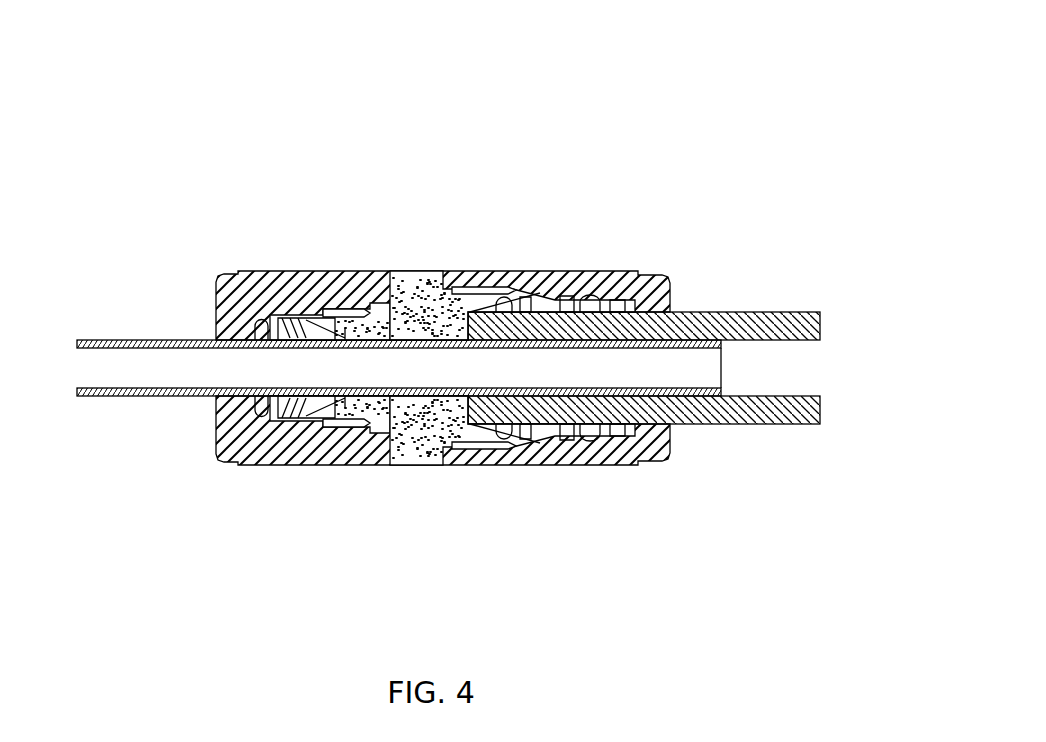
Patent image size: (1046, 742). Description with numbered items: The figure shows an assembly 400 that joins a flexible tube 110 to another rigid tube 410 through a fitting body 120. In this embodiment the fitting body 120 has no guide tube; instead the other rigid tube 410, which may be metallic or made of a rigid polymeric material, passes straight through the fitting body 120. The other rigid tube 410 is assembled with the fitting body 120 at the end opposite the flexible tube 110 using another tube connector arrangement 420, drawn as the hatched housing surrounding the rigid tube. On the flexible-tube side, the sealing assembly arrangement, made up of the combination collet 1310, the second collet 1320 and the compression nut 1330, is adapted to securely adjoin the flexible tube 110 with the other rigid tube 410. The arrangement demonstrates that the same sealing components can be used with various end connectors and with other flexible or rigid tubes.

The assembly 400 is at (448, 275).
The flexible tube 110 is at (746, 312).
The fitting body 120 is at (410, 465).
The other rigid tube 410 is at (160, 396).
The another tube connector arrangement 420 is at (281, 271).
The combination collet 1310 is at (553, 440).
The second collet 1320 is at (617, 465).
The compression nut 1330 is at (567, 271).